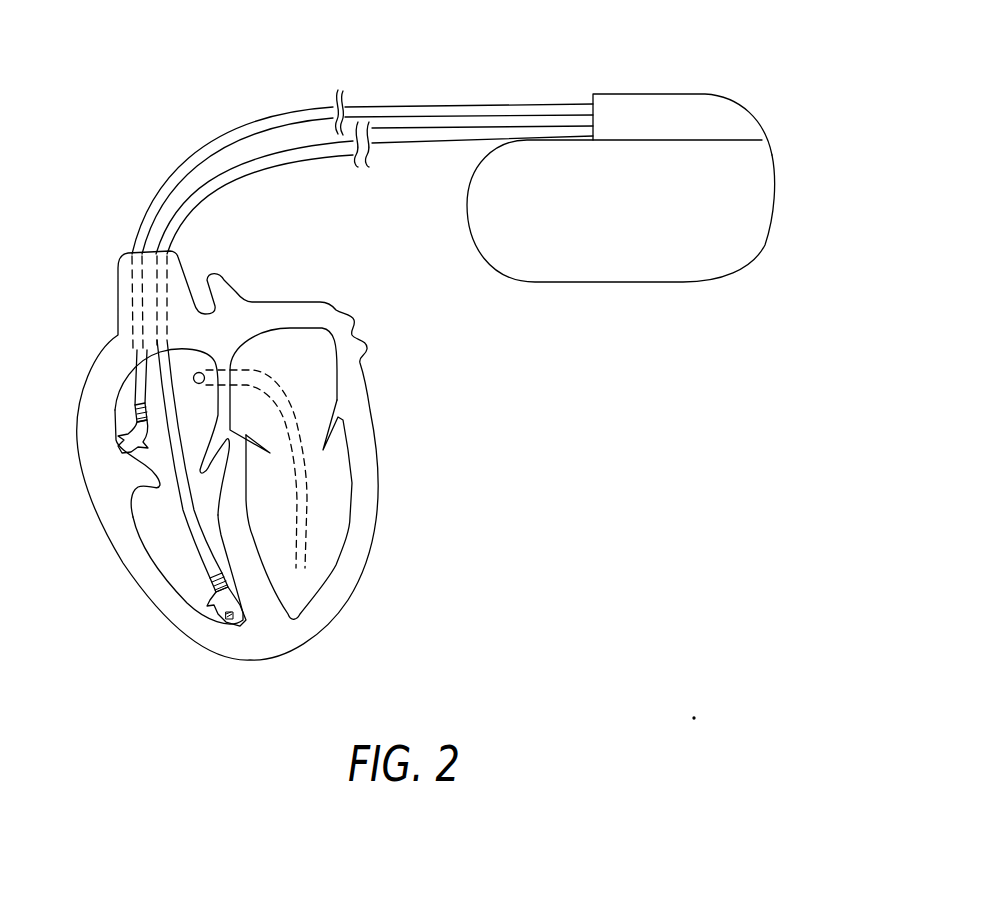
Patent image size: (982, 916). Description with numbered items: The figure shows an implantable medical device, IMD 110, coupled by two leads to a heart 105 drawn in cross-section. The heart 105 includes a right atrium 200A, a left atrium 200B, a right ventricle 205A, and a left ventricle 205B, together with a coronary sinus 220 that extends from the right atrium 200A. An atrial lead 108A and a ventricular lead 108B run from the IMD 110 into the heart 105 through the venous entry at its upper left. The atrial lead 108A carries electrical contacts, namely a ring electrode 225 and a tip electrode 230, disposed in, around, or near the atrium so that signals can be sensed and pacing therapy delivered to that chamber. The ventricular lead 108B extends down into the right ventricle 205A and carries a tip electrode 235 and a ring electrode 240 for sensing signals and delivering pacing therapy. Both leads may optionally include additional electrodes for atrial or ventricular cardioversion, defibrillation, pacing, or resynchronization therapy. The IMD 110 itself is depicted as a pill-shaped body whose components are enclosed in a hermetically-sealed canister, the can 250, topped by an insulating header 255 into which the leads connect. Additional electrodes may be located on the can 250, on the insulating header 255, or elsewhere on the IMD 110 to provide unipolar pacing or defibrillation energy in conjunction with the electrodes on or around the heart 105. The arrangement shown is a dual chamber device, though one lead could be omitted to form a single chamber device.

The heart 105 is at (375, 487).
The atrial lead 108A is at (267, 122).
The ventricular lead 108B is at (281, 160).
The IMD 110 is at (718, 28).
The right atrium 200A is at (125, 483).
The left atrium 200B is at (315, 372).
The right ventricle 205A is at (160, 520).
The left ventricle 205B is at (325, 537).
The coronary sinus 220 is at (192, 373).
The ring electrode 225 is at (136, 410).
The tip electrode 230 is at (112, 443).
The tip electrode 235 is at (230, 613).
The ring electrode 240 is at (209, 589).
The can 250 is at (776, 197).
The insulating header 255 is at (749, 108).